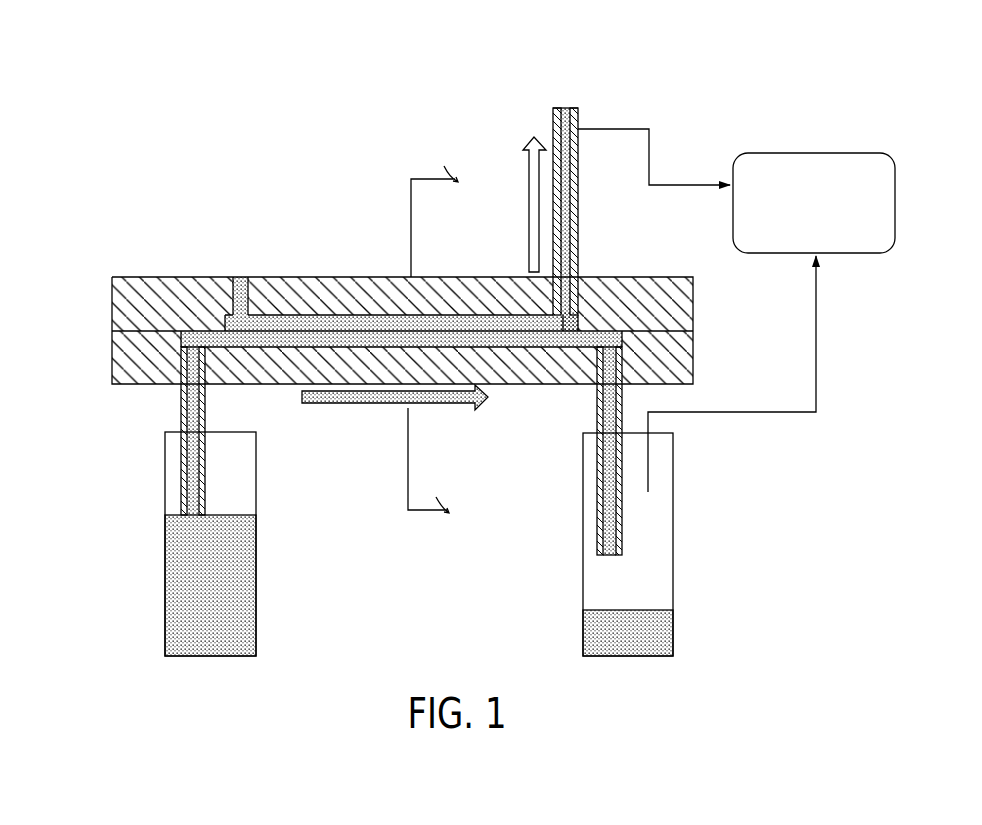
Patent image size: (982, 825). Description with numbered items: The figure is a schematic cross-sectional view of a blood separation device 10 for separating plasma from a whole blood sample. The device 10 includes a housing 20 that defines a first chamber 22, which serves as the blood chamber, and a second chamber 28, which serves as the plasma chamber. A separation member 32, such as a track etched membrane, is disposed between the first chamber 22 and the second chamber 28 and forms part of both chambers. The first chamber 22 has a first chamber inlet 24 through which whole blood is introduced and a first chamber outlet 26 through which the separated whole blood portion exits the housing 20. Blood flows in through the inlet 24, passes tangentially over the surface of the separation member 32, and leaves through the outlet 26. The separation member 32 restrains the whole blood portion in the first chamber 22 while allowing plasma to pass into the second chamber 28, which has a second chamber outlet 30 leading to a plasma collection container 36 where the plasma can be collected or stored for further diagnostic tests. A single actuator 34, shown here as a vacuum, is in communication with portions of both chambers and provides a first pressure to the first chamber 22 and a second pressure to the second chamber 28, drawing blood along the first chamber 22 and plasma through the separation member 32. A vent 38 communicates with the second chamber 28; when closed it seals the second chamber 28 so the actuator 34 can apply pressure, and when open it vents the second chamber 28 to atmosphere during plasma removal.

The blood separation device 10 is at (196, 83).
The housing 20 is at (96, 327).
The first chamber 22 is at (503, 387).
The first chamber inlet 24 is at (144, 409).
The first chamber outlet 26 is at (588, 397).
The second chamber 28 is at (374, 292).
The second chamber outlet 30 is at (587, 270).
The separation member 32 is at (338, 312).
The actuator 34 is at (815, 152).
The plasma collection container 36 is at (578, 178).
The vent 38 is at (241, 250).